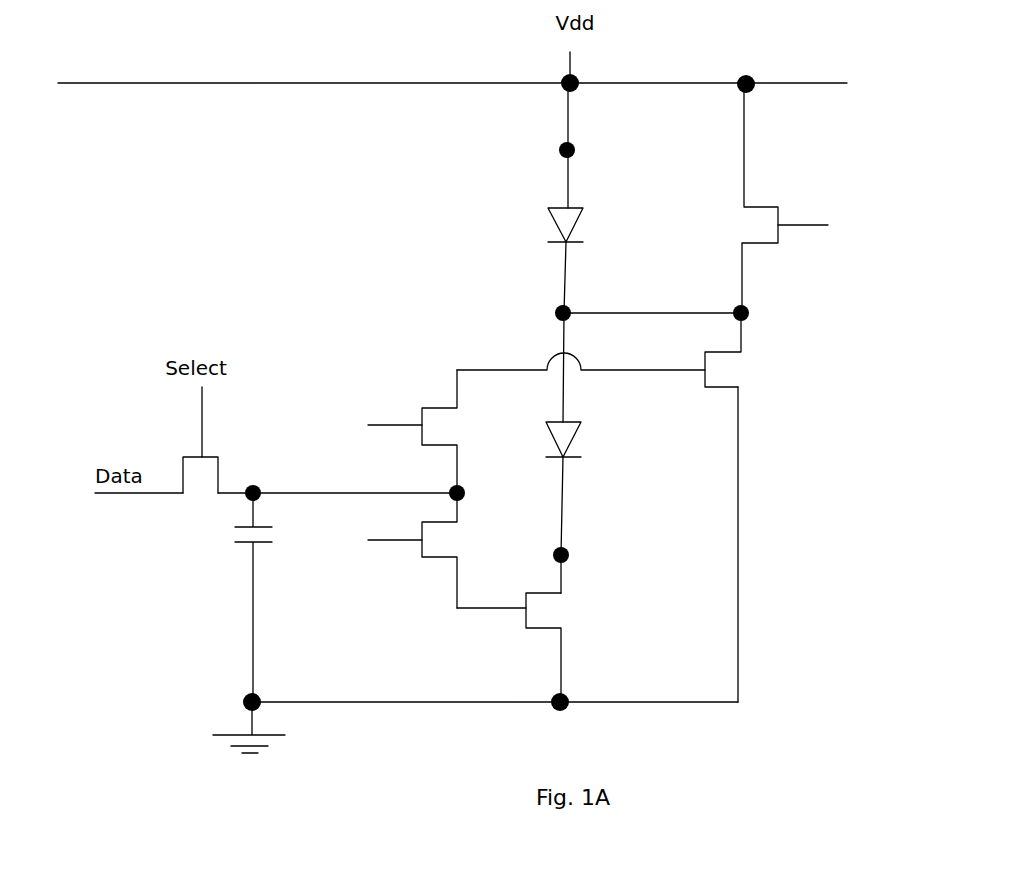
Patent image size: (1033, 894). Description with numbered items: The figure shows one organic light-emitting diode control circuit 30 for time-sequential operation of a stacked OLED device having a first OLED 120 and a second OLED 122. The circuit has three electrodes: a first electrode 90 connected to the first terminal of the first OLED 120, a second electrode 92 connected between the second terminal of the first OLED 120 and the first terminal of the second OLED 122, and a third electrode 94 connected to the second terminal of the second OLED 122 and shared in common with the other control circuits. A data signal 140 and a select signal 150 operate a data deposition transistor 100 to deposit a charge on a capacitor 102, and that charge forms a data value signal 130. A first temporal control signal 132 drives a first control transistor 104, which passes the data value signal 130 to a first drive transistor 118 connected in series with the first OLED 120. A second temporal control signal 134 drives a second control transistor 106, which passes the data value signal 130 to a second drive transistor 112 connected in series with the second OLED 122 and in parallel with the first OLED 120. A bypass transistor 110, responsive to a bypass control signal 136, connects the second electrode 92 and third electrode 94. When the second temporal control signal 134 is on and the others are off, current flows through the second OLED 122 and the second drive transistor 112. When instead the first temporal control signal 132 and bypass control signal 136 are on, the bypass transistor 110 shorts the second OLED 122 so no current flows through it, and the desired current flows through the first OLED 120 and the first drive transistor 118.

The organic light-emitting diode control circuit 30 is at (318, 280).
The first electrode 90 is at (570, 558).
The second electrode 92 is at (553, 309).
The third electrode 94 is at (576, 152).
The data deposition transistor 100 is at (218, 457).
The capacitor 102 is at (240, 545).
The first control transistor 104 is at (440, 557).
The second control transistor 106 is at (435, 408).
The bypass transistor 110 is at (765, 207).
The second drive transistor 112 is at (736, 390).
The first drive transistor 118 is at (540, 630).
The first OLED 120 is at (575, 442).
The second OLED 122 is at (580, 225).
The data value signal 130 is at (343, 493).
The first temporal control signal 132 is at (393, 540).
The second temporal control signal 134 is at (380, 425).
The bypass control signal 136 is at (806, 226).
The data signal 140 is at (143, 493).
The select signal 150 is at (200, 420).